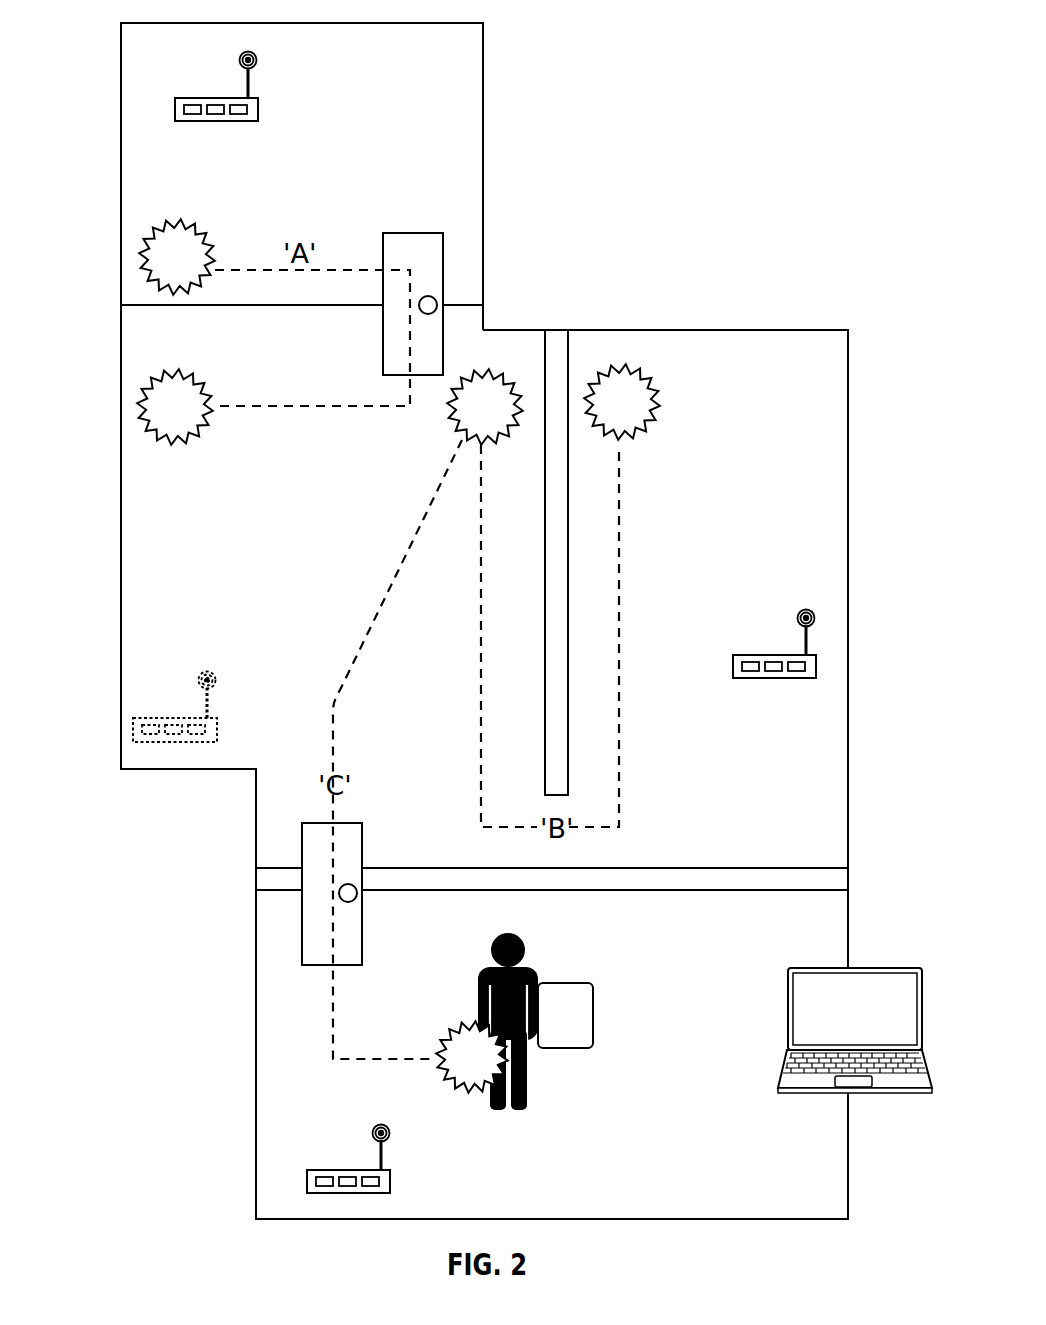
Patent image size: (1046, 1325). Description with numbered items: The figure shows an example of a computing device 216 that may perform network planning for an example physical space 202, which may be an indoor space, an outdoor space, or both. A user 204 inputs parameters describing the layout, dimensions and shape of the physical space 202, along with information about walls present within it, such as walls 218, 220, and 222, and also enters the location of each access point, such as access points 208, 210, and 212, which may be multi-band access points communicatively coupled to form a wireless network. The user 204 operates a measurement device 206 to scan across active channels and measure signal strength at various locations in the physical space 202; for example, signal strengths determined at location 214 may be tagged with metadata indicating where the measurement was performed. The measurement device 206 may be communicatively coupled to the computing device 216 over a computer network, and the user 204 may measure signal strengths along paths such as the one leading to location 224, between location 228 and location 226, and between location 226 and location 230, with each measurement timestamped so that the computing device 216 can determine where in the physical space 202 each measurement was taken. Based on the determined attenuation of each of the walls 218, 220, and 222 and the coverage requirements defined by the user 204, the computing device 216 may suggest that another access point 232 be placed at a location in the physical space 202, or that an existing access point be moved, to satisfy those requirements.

The physical space 202 is at (793, 330).
The user 204 is at (527, 1151).
The measurement device 206 is at (582, 1039).
The access point 208 is at (364, 1167).
The access point 210 is at (789, 649).
The access point 212 is at (231, 94).
The location 214 is at (194, 270).
The computing device 216 is at (872, 1024).
The wall 218 is at (121, 305).
The wall 220 is at (568, 567).
The wall 222 is at (848, 882).
The location 224 is at (192, 420).
The location 226 is at (502, 420).
The location 228 is at (639, 415).
The location 230 is at (489, 1070).
The access point 232 is at (189, 714).